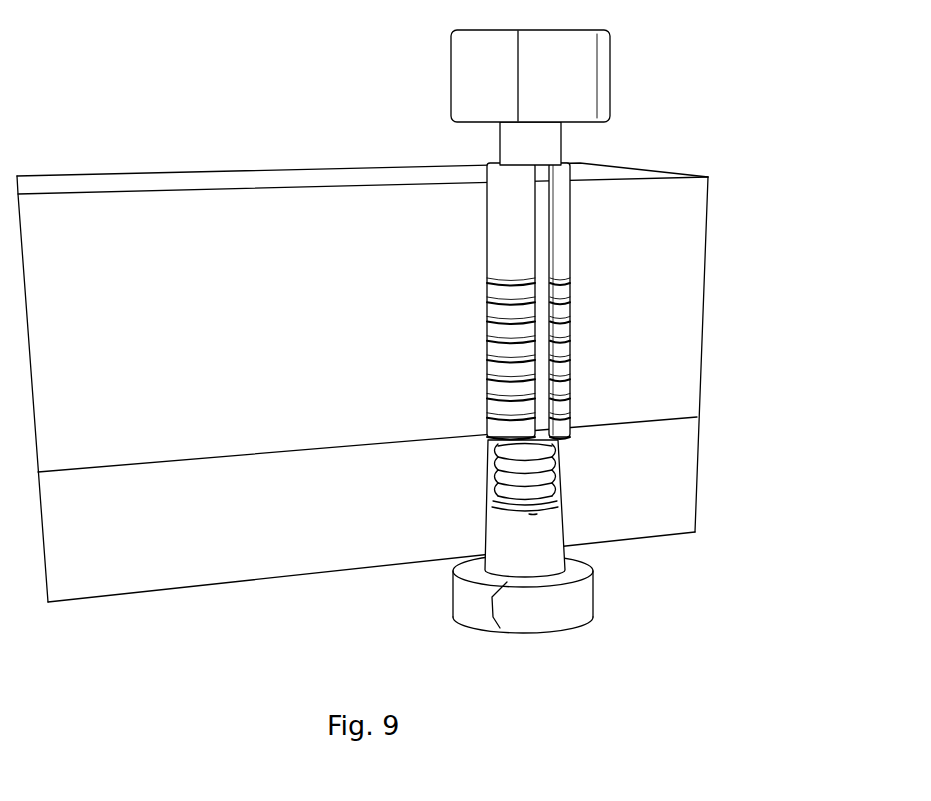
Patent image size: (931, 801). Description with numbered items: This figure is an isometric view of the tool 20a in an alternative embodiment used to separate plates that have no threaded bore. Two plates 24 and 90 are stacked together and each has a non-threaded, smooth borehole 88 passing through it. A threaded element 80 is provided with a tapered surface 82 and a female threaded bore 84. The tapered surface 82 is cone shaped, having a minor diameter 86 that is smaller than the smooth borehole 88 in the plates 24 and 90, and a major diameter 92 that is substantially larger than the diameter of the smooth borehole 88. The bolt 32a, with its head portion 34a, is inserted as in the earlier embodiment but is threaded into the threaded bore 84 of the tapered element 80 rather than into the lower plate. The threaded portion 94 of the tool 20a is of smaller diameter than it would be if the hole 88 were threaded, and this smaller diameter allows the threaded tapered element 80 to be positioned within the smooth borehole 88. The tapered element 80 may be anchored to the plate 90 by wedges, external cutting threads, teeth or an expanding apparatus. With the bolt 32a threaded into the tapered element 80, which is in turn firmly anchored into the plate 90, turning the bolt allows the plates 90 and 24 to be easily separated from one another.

The tool 20a is at (542, 235).
The head portion 34a is at (610, 73).
The bolt 32a is at (562, 145).
The plate 24 is at (407, 382).
The plate 90 is at (697, 477).
The threaded portion 94 is at (503, 464).
The smooth borehole 88 is at (476, 454).
The threaded bore 84 is at (553, 508).
The minor diameter 86 is at (533, 515).
The tapered surface 82 is at (563, 537).
The threaded element 80 is at (594, 590).
The major diameter 92 is at (500, 628).